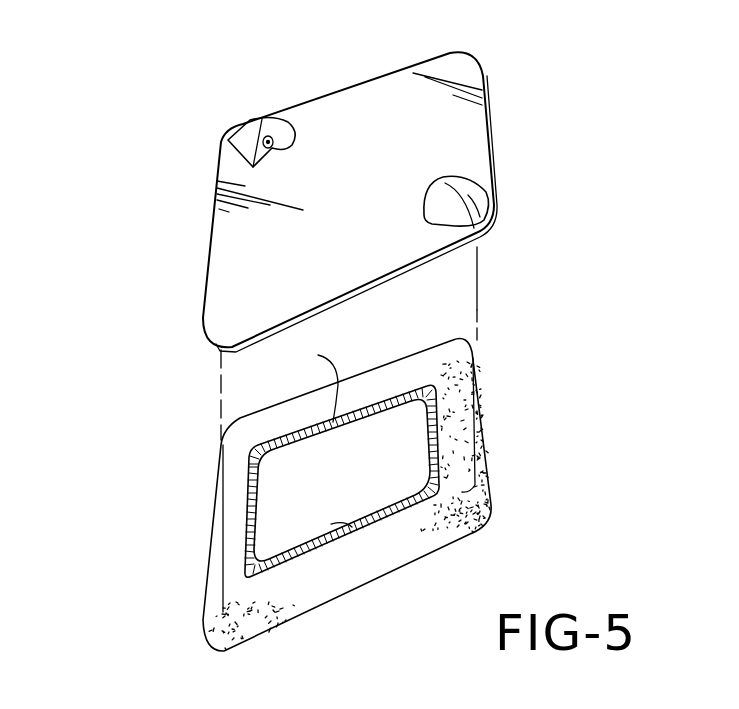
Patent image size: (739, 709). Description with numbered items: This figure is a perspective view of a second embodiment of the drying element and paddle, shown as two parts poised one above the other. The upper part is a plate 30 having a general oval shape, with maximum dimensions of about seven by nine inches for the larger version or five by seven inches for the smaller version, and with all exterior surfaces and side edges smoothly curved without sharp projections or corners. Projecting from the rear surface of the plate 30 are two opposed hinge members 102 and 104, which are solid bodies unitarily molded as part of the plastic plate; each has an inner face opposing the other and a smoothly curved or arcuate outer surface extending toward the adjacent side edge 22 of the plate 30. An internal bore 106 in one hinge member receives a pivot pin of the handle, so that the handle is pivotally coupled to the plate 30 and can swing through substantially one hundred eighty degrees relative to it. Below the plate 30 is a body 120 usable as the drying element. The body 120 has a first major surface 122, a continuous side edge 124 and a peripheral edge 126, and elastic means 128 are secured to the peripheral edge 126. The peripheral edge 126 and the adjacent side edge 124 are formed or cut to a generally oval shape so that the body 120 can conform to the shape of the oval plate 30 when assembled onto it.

The side edge 22 is at (440, 55).
The plate 30 is at (366, 180).
The hinge member 102 is at (239, 142).
The hinge member 104 is at (453, 193).
The internal bore 106 is at (273, 144).
The body 120 is at (345, 493).
The first major surface 122 is at (352, 527).
The continuous side edge 124 is at (462, 491).
The peripheral edge 126 is at (428, 430).
The elastic means 128 is at (298, 378).